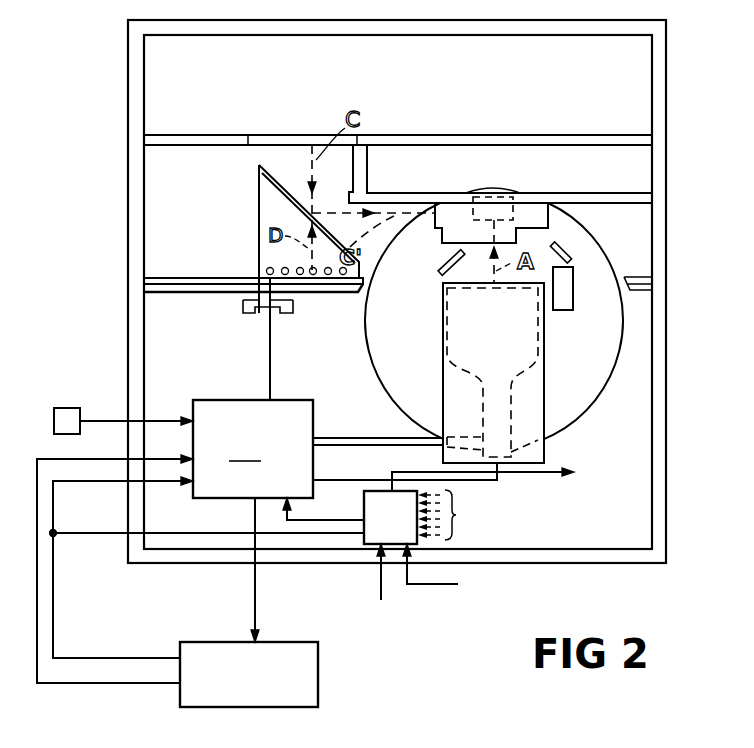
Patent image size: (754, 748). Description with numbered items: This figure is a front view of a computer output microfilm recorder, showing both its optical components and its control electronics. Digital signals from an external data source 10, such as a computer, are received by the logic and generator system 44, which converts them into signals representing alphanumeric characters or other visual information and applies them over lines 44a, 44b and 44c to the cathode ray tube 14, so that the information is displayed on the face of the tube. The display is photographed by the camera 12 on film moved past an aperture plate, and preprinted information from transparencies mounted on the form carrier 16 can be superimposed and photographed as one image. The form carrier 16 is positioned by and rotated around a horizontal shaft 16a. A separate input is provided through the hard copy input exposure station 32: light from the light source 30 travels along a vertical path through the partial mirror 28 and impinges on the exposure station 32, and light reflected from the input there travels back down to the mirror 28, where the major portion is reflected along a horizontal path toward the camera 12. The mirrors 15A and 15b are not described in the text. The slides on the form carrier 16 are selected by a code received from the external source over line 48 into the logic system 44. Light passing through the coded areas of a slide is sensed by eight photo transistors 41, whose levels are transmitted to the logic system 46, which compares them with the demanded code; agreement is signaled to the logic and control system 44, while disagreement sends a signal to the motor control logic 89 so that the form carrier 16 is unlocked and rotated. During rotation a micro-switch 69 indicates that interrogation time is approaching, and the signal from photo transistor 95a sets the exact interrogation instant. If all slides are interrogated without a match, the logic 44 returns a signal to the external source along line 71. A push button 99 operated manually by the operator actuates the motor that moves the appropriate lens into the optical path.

The external data source 10 is at (318, 667).
The camera 12 is at (553, 208).
The cathode ray tube 14 is at (544, 338).
The first mirror 15A is at (442, 262).
The second mirror 15b is at (571, 249).
The form carrier 16 is at (588, 409).
The horizontal shaft 16a is at (498, 325).
The partial mirror 28 is at (272, 176).
The light source 30 is at (257, 266).
The hard copy input exposure station 32 is at (259, 134).
The logic and generator system 44 is at (253, 449).
The line 44a is at (366, 480).
The line 44b is at (391, 437).
The line 44c is at (374, 447).
The logic system 46 is at (390, 517).
The line 48 is at (55, 598).
The line 71 is at (257, 598).
The push button 99 is at (80, 383).
The motor control logic 89 is at (516, 477).
The photo transistors 41 is at (472, 517).
The micro-switch 69 is at (417, 586).
The photo transistor 95a is at (488, 570).